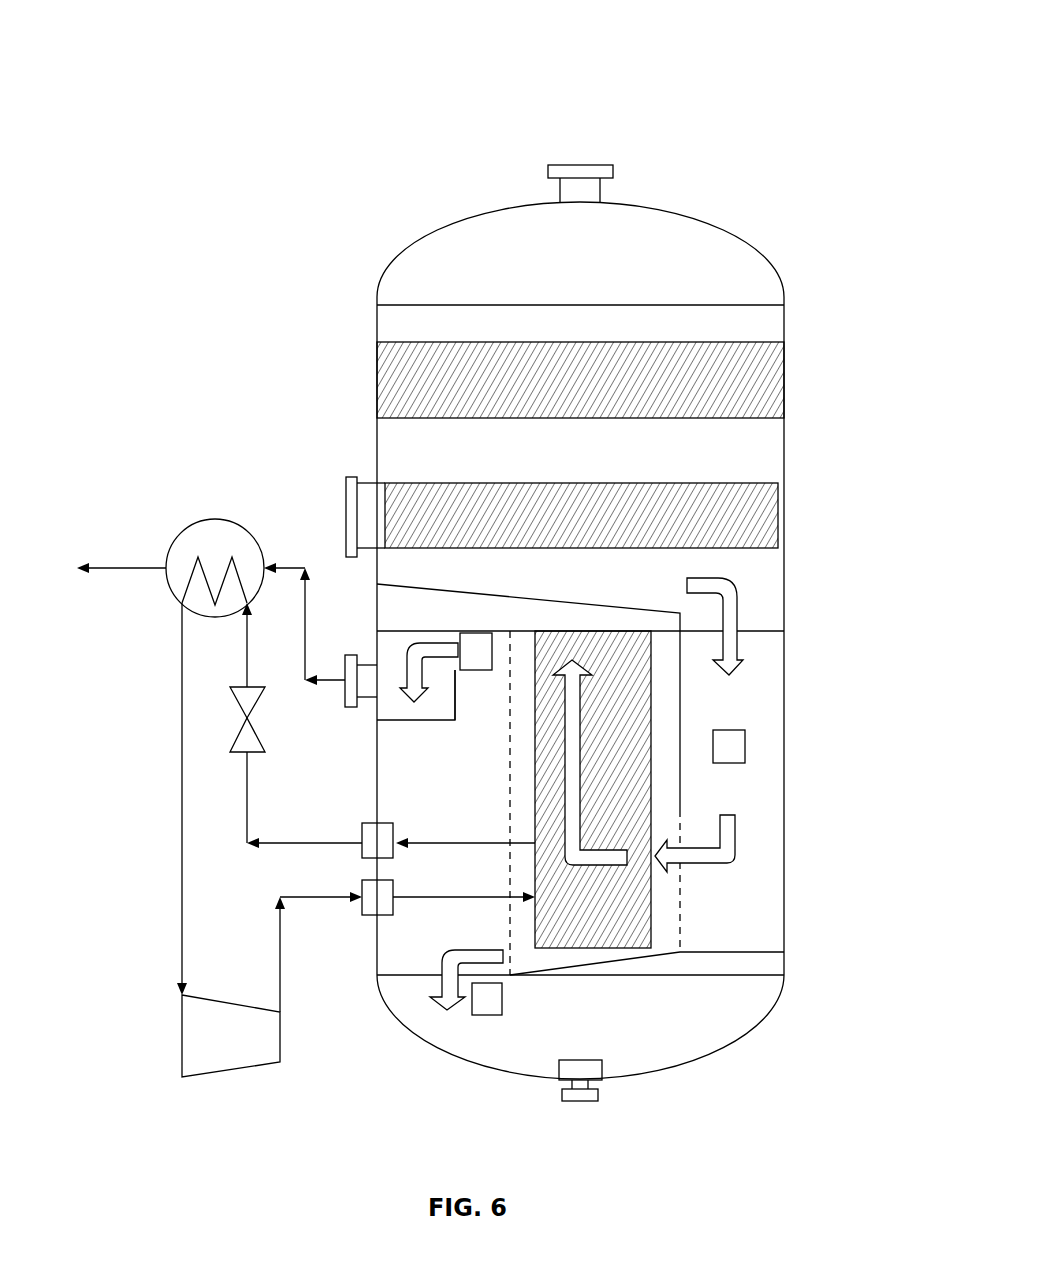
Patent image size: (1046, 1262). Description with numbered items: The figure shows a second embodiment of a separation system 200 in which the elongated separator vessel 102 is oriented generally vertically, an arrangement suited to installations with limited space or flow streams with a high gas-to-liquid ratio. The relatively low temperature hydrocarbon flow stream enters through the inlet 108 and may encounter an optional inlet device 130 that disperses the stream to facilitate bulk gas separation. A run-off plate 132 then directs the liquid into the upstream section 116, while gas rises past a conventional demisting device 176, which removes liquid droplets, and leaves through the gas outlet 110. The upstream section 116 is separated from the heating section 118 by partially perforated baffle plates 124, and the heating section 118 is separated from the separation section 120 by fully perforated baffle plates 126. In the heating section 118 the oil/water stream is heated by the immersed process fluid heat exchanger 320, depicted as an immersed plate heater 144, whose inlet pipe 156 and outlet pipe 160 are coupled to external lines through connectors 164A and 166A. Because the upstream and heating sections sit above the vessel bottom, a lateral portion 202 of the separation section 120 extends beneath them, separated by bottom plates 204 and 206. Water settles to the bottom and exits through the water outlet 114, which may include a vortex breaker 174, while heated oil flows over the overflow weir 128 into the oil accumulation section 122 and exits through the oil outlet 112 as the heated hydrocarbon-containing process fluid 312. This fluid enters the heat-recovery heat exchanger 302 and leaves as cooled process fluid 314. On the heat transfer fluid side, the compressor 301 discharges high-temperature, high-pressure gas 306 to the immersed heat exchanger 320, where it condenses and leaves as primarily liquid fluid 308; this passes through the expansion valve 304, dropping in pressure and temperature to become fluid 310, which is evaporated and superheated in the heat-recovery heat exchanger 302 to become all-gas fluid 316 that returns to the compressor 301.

The separation system 200 is at (713, 49).
The separator vessel 102 is at (784, 448).
The gas outlet 110 is at (615, 170).
The demisting device 176 is at (583, 357).
The inlet device 130 is at (587, 505).
The inlet 108 is at (352, 476).
The run-off plate 132 is at (470, 593).
The fully perforated baffle plates 126 is at (510, 815).
The process fluid heat exchanger 320 is at (729, 789).
The immersed plate heater 144 is at (625, 730).
The partially perforated baffle plates 124 is at (682, 718).
The upstream section 116 is at (767, 763).
The oil accumulation section 122 is at (428, 708).
The overflow weir 128 is at (458, 687).
The oil outlet 112 is at (350, 707).
The heated hydrocarbon-containing process fluid 312 is at (305, 622).
The heat-recovery heat exchanger 302 is at (207, 518).
The cooled hydrocarbon-containing process fluid 314 is at (122, 567).
The heat transfer fluid 310 is at (247, 667).
The expansion valve 304 is at (232, 718).
The heat transfer fluid 308 is at (247, 790).
The separation section 120 is at (377, 880).
The connectors 166A is at (364, 848).
The outlet pipe 160 is at (422, 843).
The connectors 164A is at (363, 917).
The inlet pipe 156 is at (472, 900).
The heat transfer fluid 306 is at (280, 985).
The heat transfer fluid 316 is at (182, 893).
The compressor 301 is at (252, 1050).
The heating section 118 is at (667, 927).
The bottom plate 206 is at (642, 960).
The bottom plate 204 is at (738, 952).
The lateral portion 202 is at (598, 1035).
The vortex breaker 174 is at (602, 1068).
The water outlet 114 is at (560, 1096).